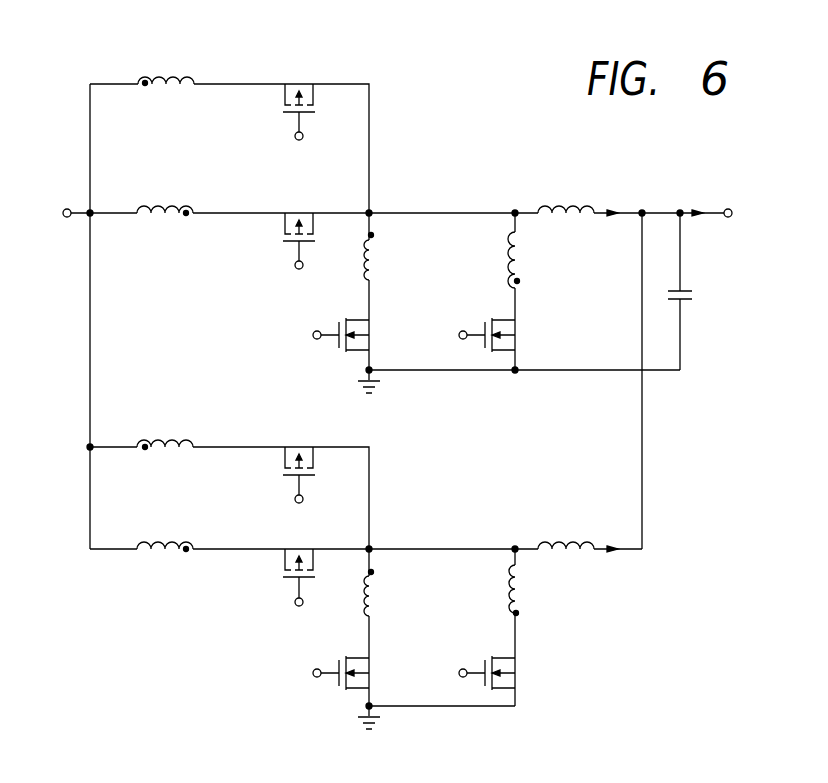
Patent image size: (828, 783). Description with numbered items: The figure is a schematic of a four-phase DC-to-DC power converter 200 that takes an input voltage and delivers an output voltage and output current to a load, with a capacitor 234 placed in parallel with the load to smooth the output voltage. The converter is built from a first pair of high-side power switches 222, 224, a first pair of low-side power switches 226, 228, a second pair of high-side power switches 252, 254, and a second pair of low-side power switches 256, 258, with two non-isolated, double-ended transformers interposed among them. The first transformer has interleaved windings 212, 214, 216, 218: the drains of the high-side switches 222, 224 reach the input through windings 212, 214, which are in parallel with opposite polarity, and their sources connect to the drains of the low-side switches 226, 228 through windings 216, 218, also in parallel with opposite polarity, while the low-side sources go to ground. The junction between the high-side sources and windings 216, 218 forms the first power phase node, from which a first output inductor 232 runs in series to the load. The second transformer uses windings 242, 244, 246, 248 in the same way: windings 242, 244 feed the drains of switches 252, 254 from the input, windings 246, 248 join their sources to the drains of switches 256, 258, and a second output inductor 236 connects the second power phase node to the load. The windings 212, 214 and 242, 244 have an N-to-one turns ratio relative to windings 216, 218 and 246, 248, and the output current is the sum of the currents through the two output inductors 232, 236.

The four-phase DC-to-DC power converter 200 is at (156, 596).
The first transformer winding 212 is at (171, 82).
The first transformer winding 214 is at (171, 217).
The first transformer winding 216 is at (370, 278).
The first transformer winding 218 is at (517, 265).
The first high-side power switch 222 is at (318, 95).
The first high-side power switch 224 is at (318, 222).
The first low-side power switch 226 is at (338, 348).
The first low-side power switch 228 is at (515, 345).
The first output inductor 232 is at (573, 207).
The capacitor 234 is at (692, 298).
The second output inductor 236 is at (573, 553).
The second transformer winding 242 is at (158, 440).
The second transformer winding 244 is at (172, 552).
The second transformer winding 246 is at (369, 600).
The second transformer winding 248 is at (517, 585).
The second high-side power switch 252 is at (313, 457).
The second high-side power switch 254 is at (290, 582).
The second low-side power switch 256 is at (338, 682).
The second low-side power switch 258 is at (515, 683).